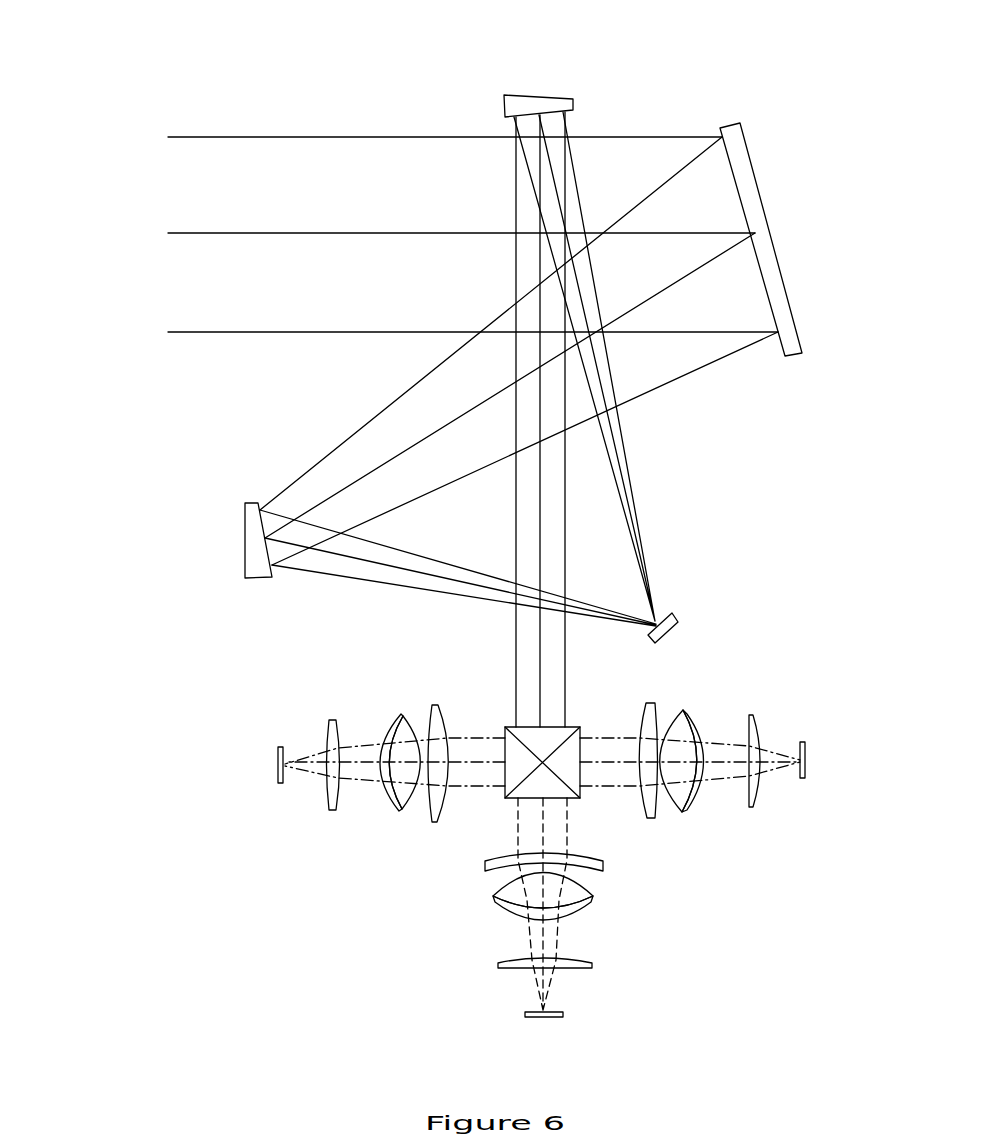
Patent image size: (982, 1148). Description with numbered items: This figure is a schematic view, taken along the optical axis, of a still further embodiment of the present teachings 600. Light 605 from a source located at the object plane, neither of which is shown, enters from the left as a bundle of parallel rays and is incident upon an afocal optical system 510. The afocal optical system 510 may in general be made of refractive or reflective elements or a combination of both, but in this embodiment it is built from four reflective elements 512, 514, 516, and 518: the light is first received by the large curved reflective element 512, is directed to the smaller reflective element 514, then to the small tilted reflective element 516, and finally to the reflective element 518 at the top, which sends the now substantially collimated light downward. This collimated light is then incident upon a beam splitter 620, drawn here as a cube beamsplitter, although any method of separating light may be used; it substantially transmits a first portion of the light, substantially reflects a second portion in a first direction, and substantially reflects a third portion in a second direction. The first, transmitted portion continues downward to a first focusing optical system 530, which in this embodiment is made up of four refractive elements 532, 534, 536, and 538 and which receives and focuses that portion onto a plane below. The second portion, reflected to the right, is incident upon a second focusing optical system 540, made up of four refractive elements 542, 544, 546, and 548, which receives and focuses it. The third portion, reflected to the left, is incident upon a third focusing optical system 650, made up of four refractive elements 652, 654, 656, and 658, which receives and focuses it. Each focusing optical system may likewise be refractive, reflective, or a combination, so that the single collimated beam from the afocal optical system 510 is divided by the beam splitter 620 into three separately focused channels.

The embodiment of the present teachings 600 is at (224, 67).
The incoming light beams 605 is at (152, 93).
The afocal optical system 510 is at (526, 375).
The reflective element 512 is at (792, 357).
The reflective element 514 is at (244, 543).
The reflective element 516 is at (673, 638).
The reflective element 518 is at (549, 94).
The beam splitter 620 is at (518, 727).
The third focusing optical system 650 is at (303, 708).
The refractive element 652 is at (434, 822).
The refractive element 654 is at (402, 822).
The refractive element 656 is at (386, 803).
The refractive element 658 is at (328, 722).
The second focusing optical system 540 is at (628, 818).
The refractive element 542 is at (653, 705).
The refractive element 544 is at (683, 712).
The refractive element 546 is at (702, 722).
The refractive element 548 is at (757, 800).
The first focusing optical system 530 is at (487, 842).
The refractive element 532 is at (600, 866).
The refractive element 534 is at (593, 895).
The refractive element 536 is at (587, 906).
The refractive element 538 is at (580, 958).